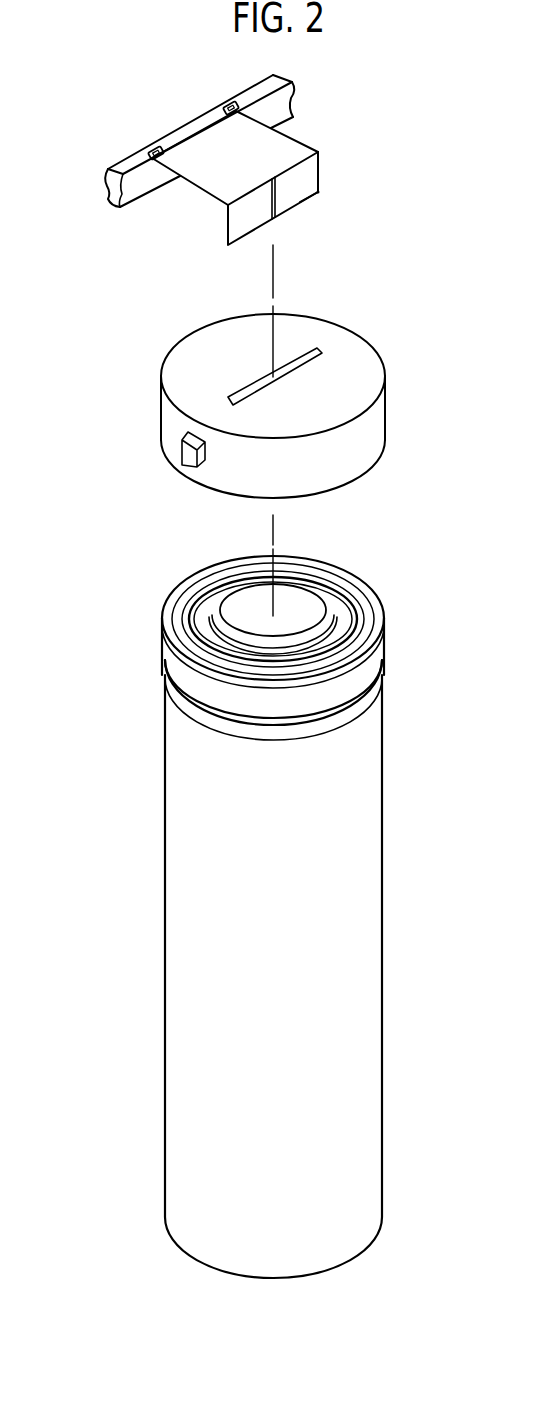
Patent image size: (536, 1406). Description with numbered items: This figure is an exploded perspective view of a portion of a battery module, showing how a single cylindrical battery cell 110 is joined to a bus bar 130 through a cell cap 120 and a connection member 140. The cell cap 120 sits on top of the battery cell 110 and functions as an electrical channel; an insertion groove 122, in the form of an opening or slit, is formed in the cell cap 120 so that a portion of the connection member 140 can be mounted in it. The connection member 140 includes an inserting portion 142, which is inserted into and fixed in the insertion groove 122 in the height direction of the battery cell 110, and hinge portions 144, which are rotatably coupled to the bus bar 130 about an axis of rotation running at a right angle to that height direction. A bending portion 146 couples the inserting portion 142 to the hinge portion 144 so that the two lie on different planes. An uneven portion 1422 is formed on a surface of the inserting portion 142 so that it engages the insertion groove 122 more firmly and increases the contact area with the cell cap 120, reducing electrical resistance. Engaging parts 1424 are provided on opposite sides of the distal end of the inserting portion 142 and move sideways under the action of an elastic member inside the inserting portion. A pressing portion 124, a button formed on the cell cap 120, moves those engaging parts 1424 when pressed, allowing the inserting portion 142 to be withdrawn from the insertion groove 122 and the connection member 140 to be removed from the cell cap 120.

The battery cell 110 is at (150, 833).
The cell cap 120 is at (152, 415).
The insertion groove 122 is at (235, 392).
The pressing portion 124 is at (187, 453).
The bus bar 130 is at (122, 162).
The connection member 140 is at (268, 151).
The inserting portion 142 is at (303, 165).
The hinge portion 144 is at (233, 107).
The bending portion 146 is at (318, 152).
The uneven portion 1422 is at (278, 199).
The engaging part 1424 is at (318, 192).